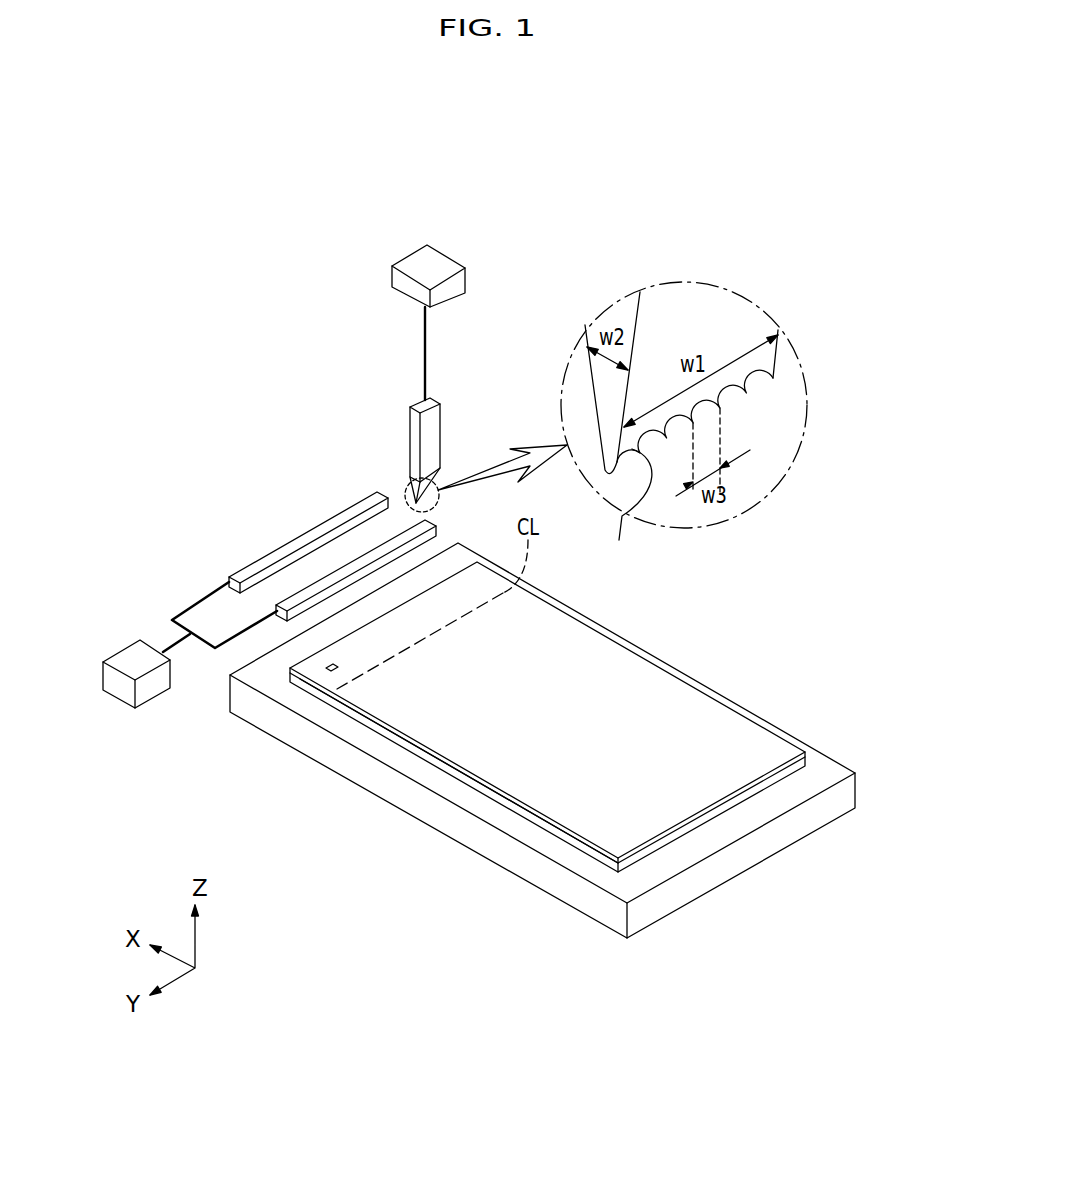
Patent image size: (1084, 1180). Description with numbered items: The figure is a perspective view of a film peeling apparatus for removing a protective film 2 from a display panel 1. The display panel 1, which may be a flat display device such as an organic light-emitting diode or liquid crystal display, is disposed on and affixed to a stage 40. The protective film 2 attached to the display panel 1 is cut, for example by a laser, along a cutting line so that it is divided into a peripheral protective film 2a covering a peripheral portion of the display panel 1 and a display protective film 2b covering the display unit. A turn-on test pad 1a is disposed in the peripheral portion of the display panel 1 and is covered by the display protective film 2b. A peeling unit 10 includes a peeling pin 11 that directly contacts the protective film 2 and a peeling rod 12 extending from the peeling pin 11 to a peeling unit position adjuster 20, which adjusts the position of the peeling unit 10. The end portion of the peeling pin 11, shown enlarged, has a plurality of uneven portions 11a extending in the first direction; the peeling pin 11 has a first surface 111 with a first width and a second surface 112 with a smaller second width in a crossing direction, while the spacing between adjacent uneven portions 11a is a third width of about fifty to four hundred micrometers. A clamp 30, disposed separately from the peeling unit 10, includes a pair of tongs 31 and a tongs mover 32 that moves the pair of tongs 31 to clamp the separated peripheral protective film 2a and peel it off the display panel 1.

The display panel 1 is at (490, 722).
The turn-on test pad 1a is at (246, 716).
The protective film 2 is at (514, 762).
The peripheral protective film 2a is at (324, 664).
The display protective film 2b is at (358, 700).
The peeling unit 10 is at (536, 380).
The peeling pin 11 is at (556, 380).
The uneven portions 11a is at (441, 500).
The peeling rod 12 is at (425, 436).
The peeling unit position adjuster 20 is at (466, 276).
The clamp 30 is at (269, 600).
The pair of tongs 31 is at (303, 590).
The tongs mover 32 is at (136, 632).
The stage 40 is at (508, 860).
The first surface 111 is at (697, 346).
The second surface 112 is at (622, 313).